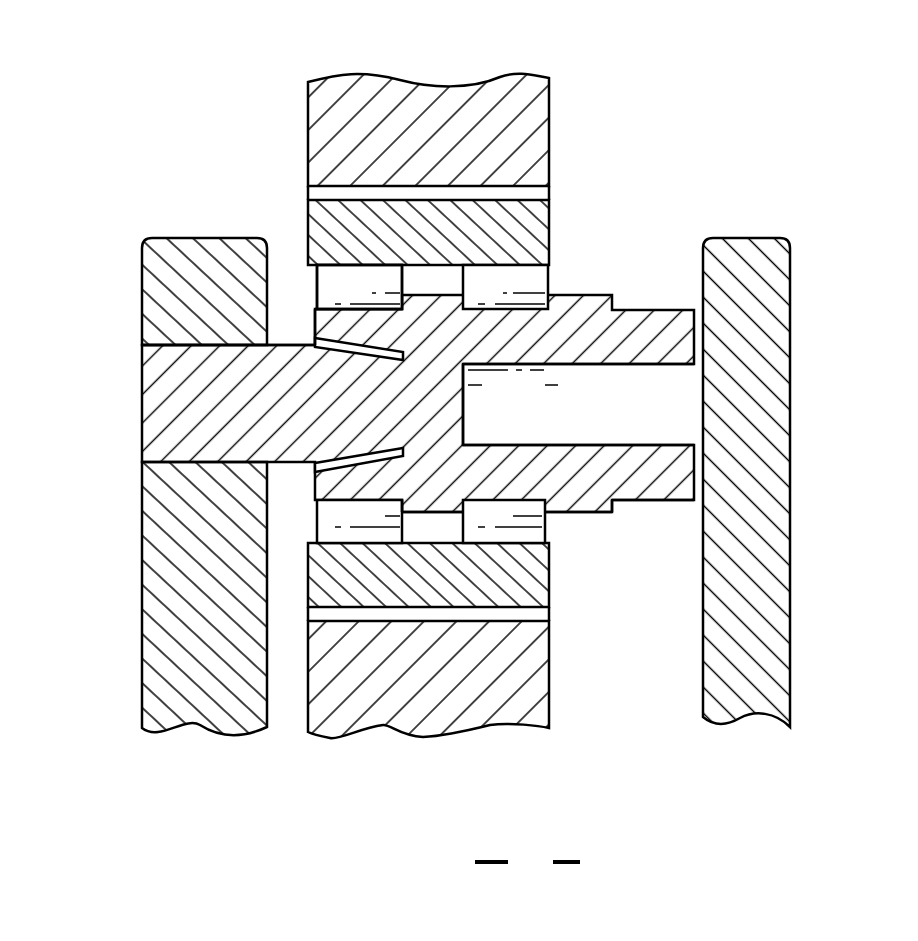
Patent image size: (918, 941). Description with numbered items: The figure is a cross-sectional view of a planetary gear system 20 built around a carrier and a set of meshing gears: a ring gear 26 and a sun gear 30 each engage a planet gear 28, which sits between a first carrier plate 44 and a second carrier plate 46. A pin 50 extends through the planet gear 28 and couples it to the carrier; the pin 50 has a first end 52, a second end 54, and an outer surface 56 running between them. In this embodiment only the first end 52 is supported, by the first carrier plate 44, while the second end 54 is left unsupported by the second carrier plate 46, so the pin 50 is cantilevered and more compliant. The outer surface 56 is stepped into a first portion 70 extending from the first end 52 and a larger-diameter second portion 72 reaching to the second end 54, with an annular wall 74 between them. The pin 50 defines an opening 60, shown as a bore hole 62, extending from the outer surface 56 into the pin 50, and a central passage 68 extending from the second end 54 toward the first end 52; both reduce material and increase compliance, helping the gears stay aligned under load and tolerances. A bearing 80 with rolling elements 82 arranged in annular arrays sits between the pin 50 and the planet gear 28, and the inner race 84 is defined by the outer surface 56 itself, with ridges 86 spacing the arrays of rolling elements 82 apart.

The planetary gear system 20 is at (451, 462).
The ring gear 26 is at (569, 102).
The planet gear 28 is at (564, 212).
The sun gear 30 is at (569, 700).
The first carrier plate 44 is at (160, 677).
The second carrier plate 46 is at (768, 662).
The pin 50 is at (451, 406).
The first end 52 is at (451, 406).
The second end 54 is at (493, 406).
The outer surface 56 is at (640, 300).
The opening 60 is at (302, 337).
The bore hole 62 is at (315, 470).
The central passage 68 is at (668, 401).
The first portion 70 is at (202, 343).
The second portion 72 is at (488, 502).
The annular wall 74 is at (268, 305).
The bearing 80 is at (368, 274).
The rolling elements 82 is at (318, 286).
The inner race 84 is at (370, 502).
The ridges 86 is at (588, 513).